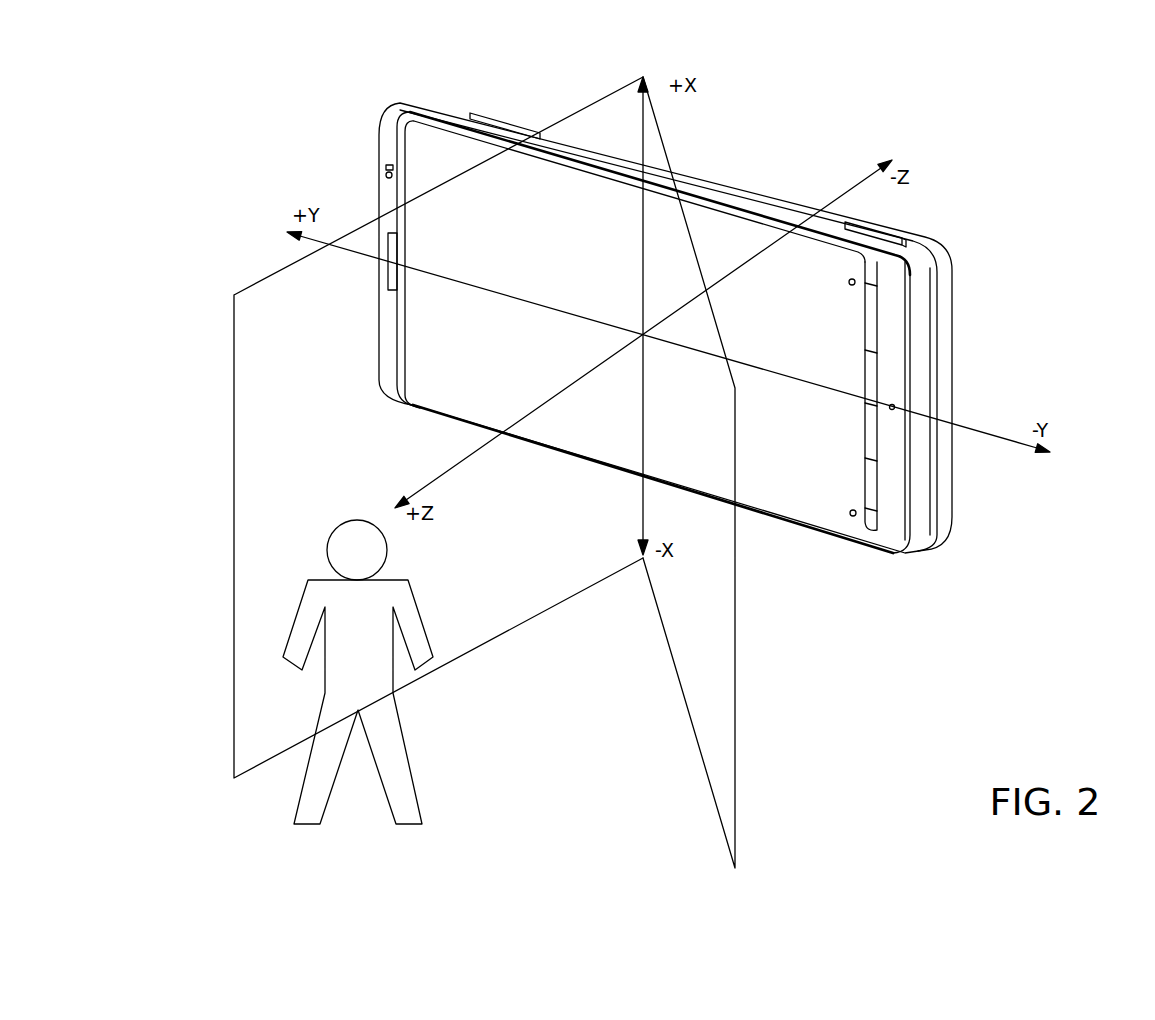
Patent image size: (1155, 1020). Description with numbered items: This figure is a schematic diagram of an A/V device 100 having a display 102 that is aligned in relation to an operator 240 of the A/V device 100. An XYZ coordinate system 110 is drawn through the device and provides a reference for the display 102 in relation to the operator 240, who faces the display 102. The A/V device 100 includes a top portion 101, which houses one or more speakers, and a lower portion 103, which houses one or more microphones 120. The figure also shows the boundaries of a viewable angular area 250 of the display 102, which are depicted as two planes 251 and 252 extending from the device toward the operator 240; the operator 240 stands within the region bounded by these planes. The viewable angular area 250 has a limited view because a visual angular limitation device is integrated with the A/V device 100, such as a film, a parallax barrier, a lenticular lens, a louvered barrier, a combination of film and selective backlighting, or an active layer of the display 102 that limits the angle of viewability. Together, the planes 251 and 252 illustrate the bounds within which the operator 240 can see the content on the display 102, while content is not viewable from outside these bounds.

The A/V device 100 is at (1051, 124).
The XYZ coordinate system 110 is at (666, 317).
The top portion 101 is at (379, 303).
The display 102 is at (592, 448).
The lower portion 103 is at (935, 478).
The microphones 120 is at (892, 407).
The operator 240 is at (355, 518).
The viewable angular area 250 is at (553, 190).
The plane 251 is at (735, 676).
The plane 252 is at (234, 432).